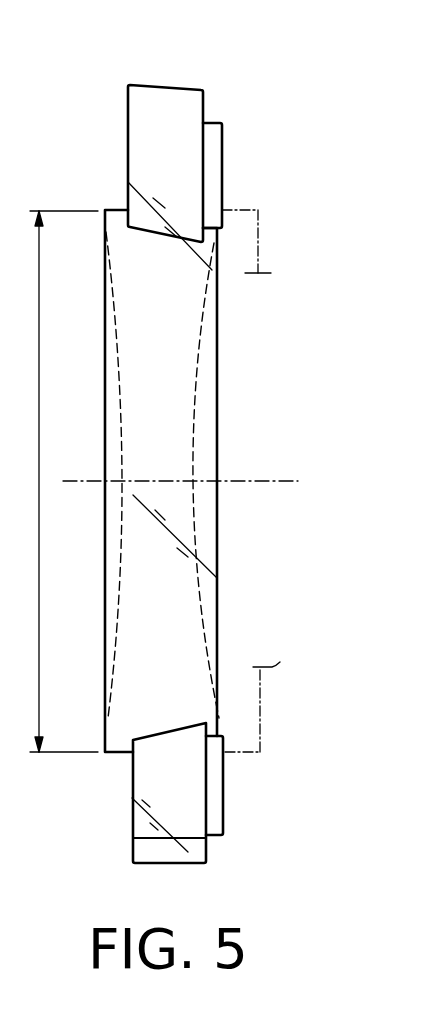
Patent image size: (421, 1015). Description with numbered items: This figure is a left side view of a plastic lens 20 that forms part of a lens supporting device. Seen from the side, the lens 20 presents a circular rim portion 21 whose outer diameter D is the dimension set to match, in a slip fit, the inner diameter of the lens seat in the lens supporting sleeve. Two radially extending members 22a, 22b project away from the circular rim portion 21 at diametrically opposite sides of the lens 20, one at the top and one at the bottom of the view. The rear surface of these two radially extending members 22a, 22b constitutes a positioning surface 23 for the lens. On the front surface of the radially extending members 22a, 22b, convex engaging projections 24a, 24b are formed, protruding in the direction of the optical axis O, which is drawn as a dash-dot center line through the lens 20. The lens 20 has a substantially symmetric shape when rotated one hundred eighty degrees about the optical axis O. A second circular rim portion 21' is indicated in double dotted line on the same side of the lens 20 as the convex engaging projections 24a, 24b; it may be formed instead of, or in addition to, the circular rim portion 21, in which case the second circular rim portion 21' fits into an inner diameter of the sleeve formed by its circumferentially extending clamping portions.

The plastic lens 20 is at (225, 106).
The circular rim portion 21 is at (148, 454).
The second circular rim portion 21' is at (265, 460).
The radially extending member 22a is at (168, 92).
The radially extending member 22b is at (193, 816).
The positioning surface 23 is at (128, 113).
The convex engaging projection 24a is at (213, 155).
The convex engaging projection 24b is at (223, 798).
The outer diameter D is at (64, 481).
The optical axis O is at (280, 477).